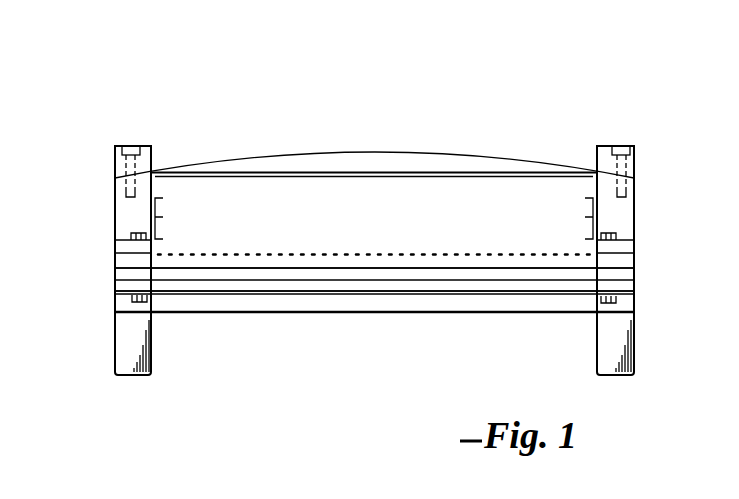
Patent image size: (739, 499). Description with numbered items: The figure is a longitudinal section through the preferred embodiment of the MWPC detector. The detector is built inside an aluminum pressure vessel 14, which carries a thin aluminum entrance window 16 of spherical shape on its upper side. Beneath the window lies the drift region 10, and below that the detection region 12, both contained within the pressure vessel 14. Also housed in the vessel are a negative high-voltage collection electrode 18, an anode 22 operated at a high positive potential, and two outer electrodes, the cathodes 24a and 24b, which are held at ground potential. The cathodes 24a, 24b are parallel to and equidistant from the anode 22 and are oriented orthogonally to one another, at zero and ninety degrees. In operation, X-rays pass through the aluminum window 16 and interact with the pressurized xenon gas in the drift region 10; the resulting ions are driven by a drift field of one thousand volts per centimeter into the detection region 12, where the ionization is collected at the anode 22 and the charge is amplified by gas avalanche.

The drift region 10 is at (405, 255).
The detection region 12 is at (433, 283).
The aluminum pressure vessel 14 is at (112, 223).
The aluminum entrance window 16 is at (377, 152).
The negative high-voltage collection electrode 18 is at (459, 172).
The anode 22 is at (215, 258).
The cathode 24a is at (277, 253).
The cathode 24b is at (291, 272).